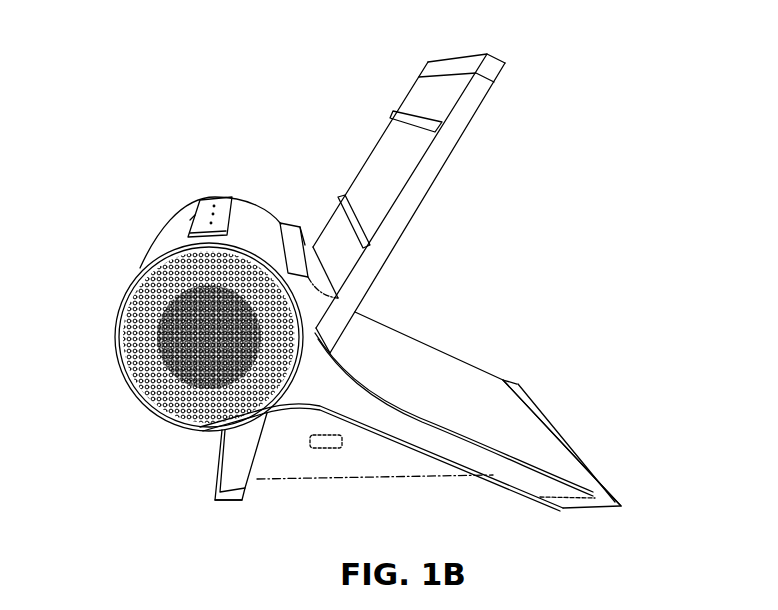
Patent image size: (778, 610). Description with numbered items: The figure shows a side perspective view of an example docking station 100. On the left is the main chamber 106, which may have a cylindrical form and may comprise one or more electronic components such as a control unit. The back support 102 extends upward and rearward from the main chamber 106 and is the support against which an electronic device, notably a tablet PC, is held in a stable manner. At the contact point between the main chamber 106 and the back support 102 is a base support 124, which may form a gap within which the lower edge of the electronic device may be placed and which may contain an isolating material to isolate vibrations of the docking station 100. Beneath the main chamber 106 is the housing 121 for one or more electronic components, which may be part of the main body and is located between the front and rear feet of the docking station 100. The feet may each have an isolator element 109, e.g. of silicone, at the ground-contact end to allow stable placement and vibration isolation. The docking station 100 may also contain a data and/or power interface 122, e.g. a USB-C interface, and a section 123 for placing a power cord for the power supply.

The docking station 100 is at (598, 74).
The back support 102 is at (435, 170).
The main chamber 106 is at (128, 382).
The isolator element 109 is at (214, 500).
The housing 121 is at (292, 466).
The data and/or power interface 122 is at (353, 448).
The section 123 is at (549, 422).
The base support 124 is at (313, 246).